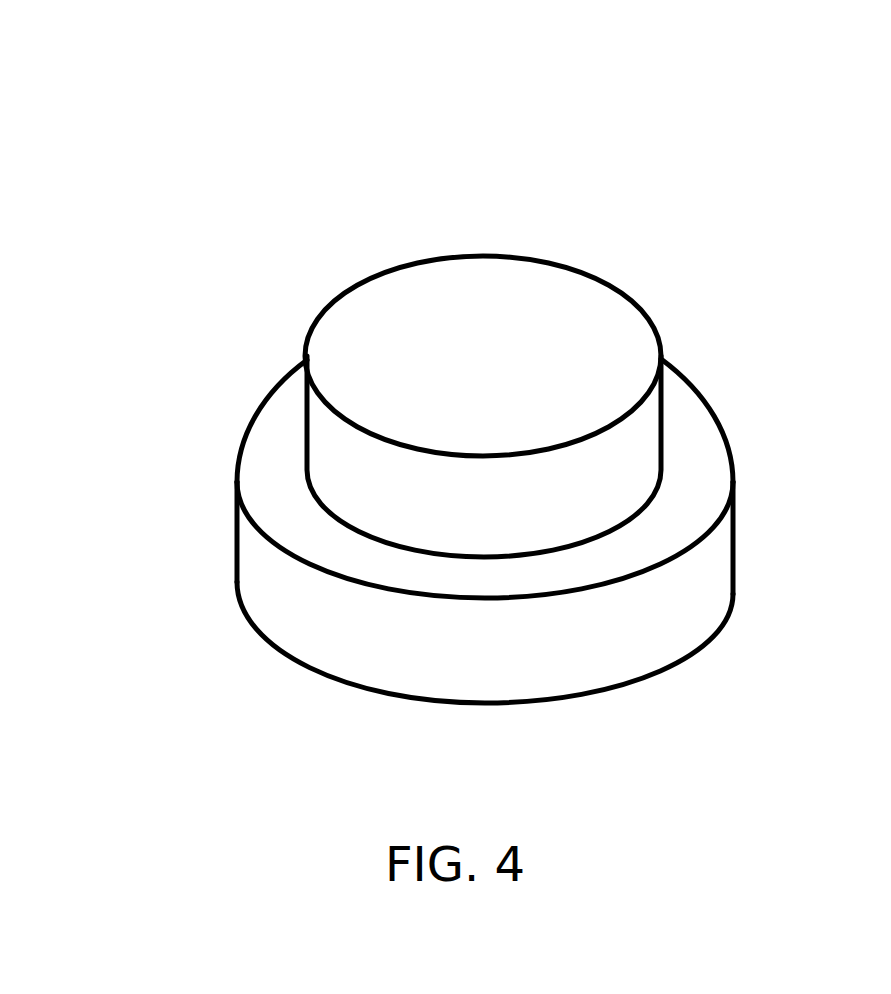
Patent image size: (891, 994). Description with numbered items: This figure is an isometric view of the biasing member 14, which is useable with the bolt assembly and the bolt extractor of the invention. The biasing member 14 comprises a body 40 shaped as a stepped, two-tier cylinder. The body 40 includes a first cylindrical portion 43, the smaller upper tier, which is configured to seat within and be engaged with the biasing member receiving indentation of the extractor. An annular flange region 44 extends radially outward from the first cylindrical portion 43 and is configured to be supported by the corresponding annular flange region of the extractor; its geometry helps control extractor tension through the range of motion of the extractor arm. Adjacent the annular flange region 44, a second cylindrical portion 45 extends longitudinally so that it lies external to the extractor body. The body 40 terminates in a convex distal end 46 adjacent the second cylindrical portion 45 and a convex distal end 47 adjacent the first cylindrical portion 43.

The biasing member 14 is at (802, 107).
The body 40 is at (190, 453).
The first cylindrical portion 43 is at (305, 350).
The annular flange region 44 is at (697, 432).
The second cylindrical portion 45 is at (721, 553).
The convex distal end 46 is at (695, 657).
The convex distal end 47 is at (513, 285).